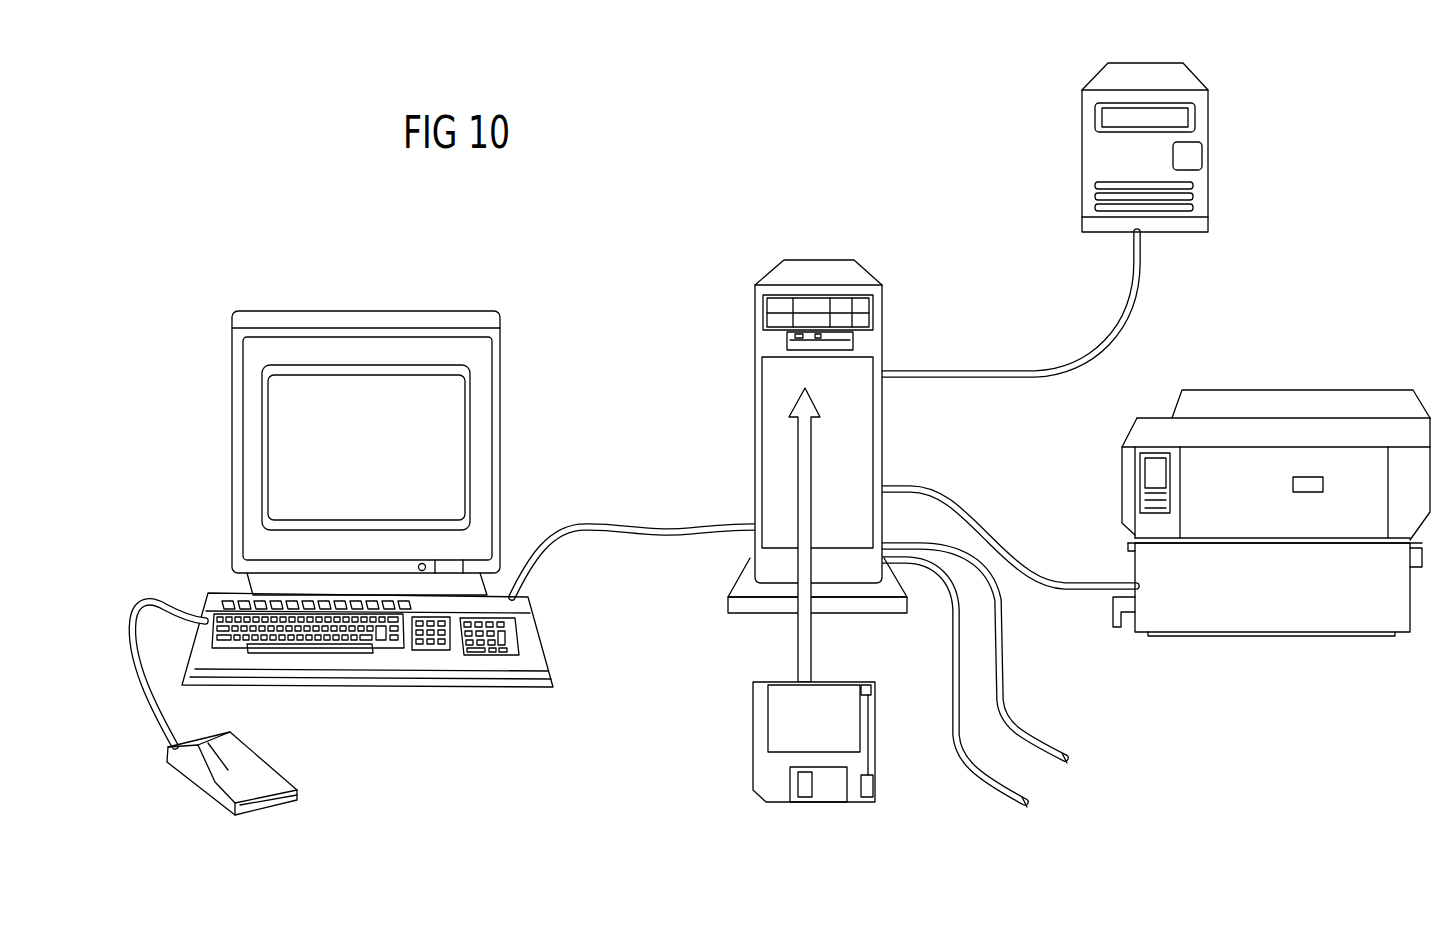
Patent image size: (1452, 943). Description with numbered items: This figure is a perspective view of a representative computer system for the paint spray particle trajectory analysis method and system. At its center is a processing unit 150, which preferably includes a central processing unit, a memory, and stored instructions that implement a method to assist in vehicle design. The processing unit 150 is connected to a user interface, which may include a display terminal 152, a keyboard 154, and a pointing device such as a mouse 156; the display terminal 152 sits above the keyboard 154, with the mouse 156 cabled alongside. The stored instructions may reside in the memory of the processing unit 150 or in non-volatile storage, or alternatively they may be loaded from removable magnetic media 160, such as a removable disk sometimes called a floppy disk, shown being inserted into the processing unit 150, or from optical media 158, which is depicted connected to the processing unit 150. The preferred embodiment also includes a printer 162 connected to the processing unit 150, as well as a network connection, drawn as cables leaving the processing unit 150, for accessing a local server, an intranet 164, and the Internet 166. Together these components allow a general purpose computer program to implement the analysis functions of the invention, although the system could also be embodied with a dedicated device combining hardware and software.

The processing unit 150 is at (755, 325).
The display terminal 152 is at (381, 311).
The keyboard 154 is at (468, 690).
The mouse 156 is at (267, 758).
The optical media 158 is at (1082, 157).
The removable magnetic media 160 is at (753, 720).
The printer 162 is at (1272, 390).
The intranet 164 is at (973, 770).
The Internet 166 is at (1004, 688).